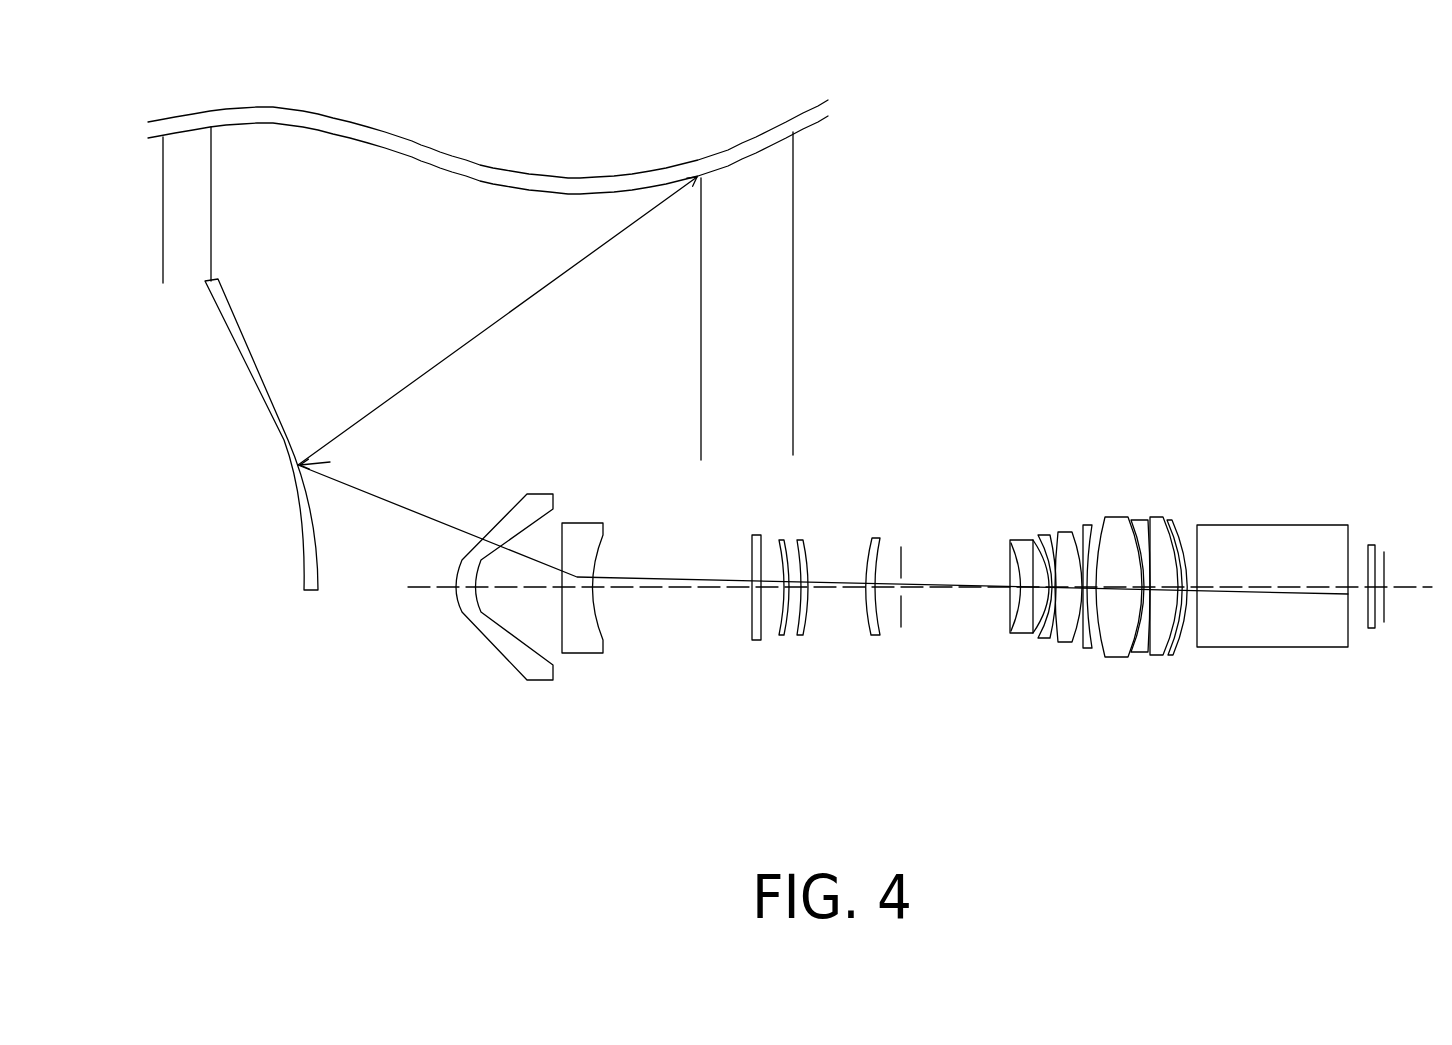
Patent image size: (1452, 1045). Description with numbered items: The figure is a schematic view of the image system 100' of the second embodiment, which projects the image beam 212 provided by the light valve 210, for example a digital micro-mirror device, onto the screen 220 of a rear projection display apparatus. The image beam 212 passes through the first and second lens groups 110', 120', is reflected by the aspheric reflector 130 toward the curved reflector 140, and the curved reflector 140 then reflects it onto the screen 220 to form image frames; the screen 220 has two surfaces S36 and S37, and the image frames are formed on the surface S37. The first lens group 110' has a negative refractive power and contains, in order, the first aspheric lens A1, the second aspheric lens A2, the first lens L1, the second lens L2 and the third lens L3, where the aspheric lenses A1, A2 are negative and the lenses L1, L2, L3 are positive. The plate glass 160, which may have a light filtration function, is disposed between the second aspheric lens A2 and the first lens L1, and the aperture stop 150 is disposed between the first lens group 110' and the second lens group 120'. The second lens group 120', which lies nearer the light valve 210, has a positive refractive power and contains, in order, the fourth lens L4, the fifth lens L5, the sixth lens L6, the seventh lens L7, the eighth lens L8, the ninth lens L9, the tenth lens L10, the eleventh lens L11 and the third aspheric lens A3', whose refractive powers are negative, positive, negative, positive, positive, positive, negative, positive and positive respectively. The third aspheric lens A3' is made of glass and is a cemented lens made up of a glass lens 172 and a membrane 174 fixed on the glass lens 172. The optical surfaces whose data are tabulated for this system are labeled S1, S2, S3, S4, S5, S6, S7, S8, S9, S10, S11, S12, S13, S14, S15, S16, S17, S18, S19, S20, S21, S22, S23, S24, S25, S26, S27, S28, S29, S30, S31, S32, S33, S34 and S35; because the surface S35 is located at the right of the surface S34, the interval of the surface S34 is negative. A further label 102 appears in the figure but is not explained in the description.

The image system 100' is at (1129, 242).
The optical axis 102 is at (410, 586).
The first lens group 110' is at (670, 838).
The second lens group 120' is at (1061, 838).
The aspheric reflector 130 is at (299, 500).
The curved reflector 140 is at (797, 258).
The aperture stop 150 is at (901, 629).
The plate glass 160 is at (752, 625).
The glass lens 172 is at (1175, 640).
The membrane 174 is at (1177, 648).
The light valve 210 is at (1385, 558).
The image beam 212 is at (1279, 594).
The screen 220 is at (172, 258).
The first aspheric lens A1 is at (553, 675).
The second aspheric lens A2 is at (600, 655).
The third aspheric lens A3' is at (1229, 788).
The first lens L1 is at (778, 640).
The second lens L2 is at (802, 642).
The third lens L3 is at (875, 640).
The fourth lens L4 is at (1010, 635).
The fifth lens L5 is at (1040, 639).
The sixth lens L6 is at (1070, 643).
The seventh lens L7 is at (1086, 649).
The eighth lens L8 is at (1110, 658).
The ninth lens L9 is at (1125, 648).
The tenth lens L10 is at (1152, 656).
The eleventh lens L11 is at (1168, 656).
The surface S1 is at (1384, 612).
The surface S2 is at (1372, 612).
The surface S3 is at (1367, 560).
The surface S4 is at (1350, 533).
The surface S5 is at (1326, 512).
The surface S6 is at (1199, 547).
The surface S7 is at (1182, 550).
The surface S8 is at (1168, 528).
The surface S9 is at (1158, 522).
The surface S10 is at (1152, 523).
The surface S11 is at (1133, 527).
The surface S12 is at (1115, 535).
The surface S13 is at (1093, 528).
The surface S14 is at (1083, 527).
The surface S15 is at (1075, 527).
The surface S16 is at (1059, 530).
The surface S17 is at (1053, 536).
The surface S18 is at (1025, 537).
The surface S19 is at (1020, 548).
The surface S20 is at (1010, 565).
The surface S21 is at (903, 568).
The surface S22 is at (875, 548).
The surface S23 is at (862, 573).
The surface S24 is at (800, 545).
The surface S25 is at (810, 555).
The surface S26 is at (790, 560).
The surface S27 is at (780, 560).
The surface S28 is at (772, 547).
The surface S29 is at (750, 552).
The surface S30 is at (600, 547).
The surface S31 is at (572, 547).
The surface S32 is at (488, 617).
The surface S33 is at (457, 608).
The surface S34 is at (318, 580).
The surface S35 is at (700, 205).
The surface S36 is at (212, 165).
The surface S37 is at (163, 222).